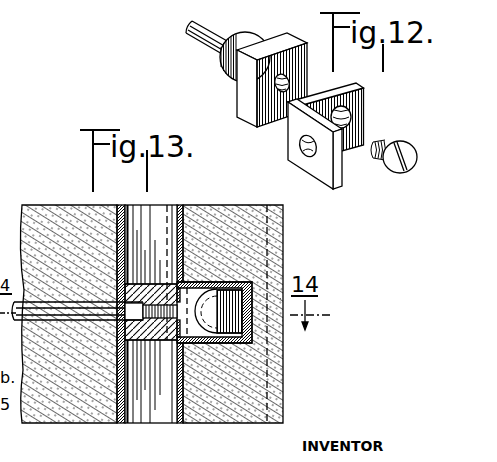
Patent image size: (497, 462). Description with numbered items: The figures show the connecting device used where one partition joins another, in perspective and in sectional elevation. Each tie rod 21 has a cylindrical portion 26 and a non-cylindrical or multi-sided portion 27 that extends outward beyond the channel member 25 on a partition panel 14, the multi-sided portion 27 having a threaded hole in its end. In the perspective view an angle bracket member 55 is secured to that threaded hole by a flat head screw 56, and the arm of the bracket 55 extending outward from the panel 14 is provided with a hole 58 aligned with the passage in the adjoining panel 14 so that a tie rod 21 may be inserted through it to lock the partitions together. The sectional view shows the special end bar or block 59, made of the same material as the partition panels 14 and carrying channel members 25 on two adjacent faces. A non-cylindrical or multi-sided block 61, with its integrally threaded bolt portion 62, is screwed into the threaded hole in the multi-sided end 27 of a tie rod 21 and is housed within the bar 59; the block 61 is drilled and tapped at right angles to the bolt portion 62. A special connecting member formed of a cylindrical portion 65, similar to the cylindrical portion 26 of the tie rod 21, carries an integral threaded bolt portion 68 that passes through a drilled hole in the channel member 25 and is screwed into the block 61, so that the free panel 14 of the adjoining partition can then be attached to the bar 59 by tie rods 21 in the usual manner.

In FIG. 13, the partition panel 14 is at (48, 217).
In FIG. 12, the tie rod 21 is at (198, 41).
In FIG. 13, the tie rod 21 is at (35, 311).
In FIG. 13, the channel member 25 is at (155, 422).
In FIG. 12, the cylindrical portion 26 is at (226, 72).
In FIG. 13, the cylindrical portion 26 is at (151, 381).
In FIG. 12, the non-cylindrical or multi-sided portion 27 is at (246, 97).
In FIG. 13, the non-cylindrical or multi-sided portion 27 is at (160, 341).
In FIG. 12, the angle bracket member 55 is at (326, 137).
In FIG. 12, the flat head screw 56 is at (395, 146).
In FIG. 12, the hole 58 is at (311, 157).
In FIG. 13, the end bar or block 59 is at (270, 252).
In FIG. 13, the non-cylindrical or multi-sided block 61 is at (214, 348).
In FIG. 13, the threaded bolt portion 62 is at (158, 283).
In FIG. 13, the cylindrical portion 65 is at (196, 424).
In FIG. 13, the threaded bolt portion 68 is at (202, 206).